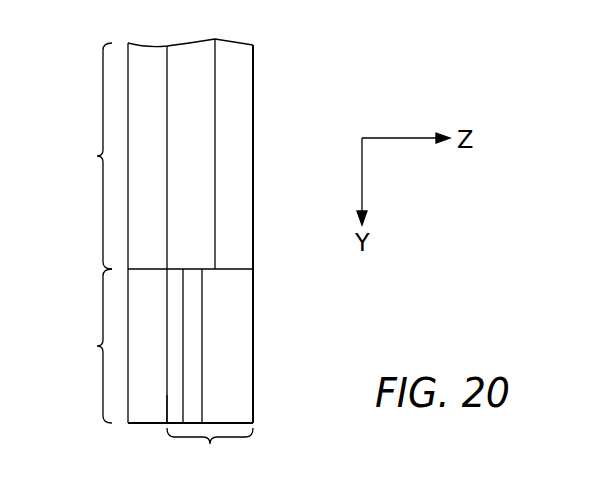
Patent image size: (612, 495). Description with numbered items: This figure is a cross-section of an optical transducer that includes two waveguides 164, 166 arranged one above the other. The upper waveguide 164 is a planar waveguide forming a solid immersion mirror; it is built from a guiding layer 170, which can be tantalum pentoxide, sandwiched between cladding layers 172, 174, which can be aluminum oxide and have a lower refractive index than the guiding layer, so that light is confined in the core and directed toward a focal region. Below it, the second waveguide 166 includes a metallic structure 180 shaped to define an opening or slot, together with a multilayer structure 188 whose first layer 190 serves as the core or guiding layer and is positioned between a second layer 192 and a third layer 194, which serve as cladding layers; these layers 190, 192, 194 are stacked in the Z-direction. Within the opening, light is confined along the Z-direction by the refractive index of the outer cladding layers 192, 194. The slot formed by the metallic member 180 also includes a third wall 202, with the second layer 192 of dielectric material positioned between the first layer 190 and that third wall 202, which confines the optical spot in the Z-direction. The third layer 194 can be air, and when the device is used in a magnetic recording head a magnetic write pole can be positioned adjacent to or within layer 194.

The waveguide 164 is at (85, 156).
The waveguide 166 is at (85, 346).
The guiding layer 170 is at (188, 66).
The cladding layer 172 is at (148, 53).
The cladding layer 174 is at (235, 53).
The metallic structure 180 is at (137, 390).
The multilayer structure 188 is at (210, 453).
The first layer 190 is at (192, 345).
The second layer 192 is at (175, 305).
The third layer 194 is at (233, 382).
The third wall 202 is at (163, 402).